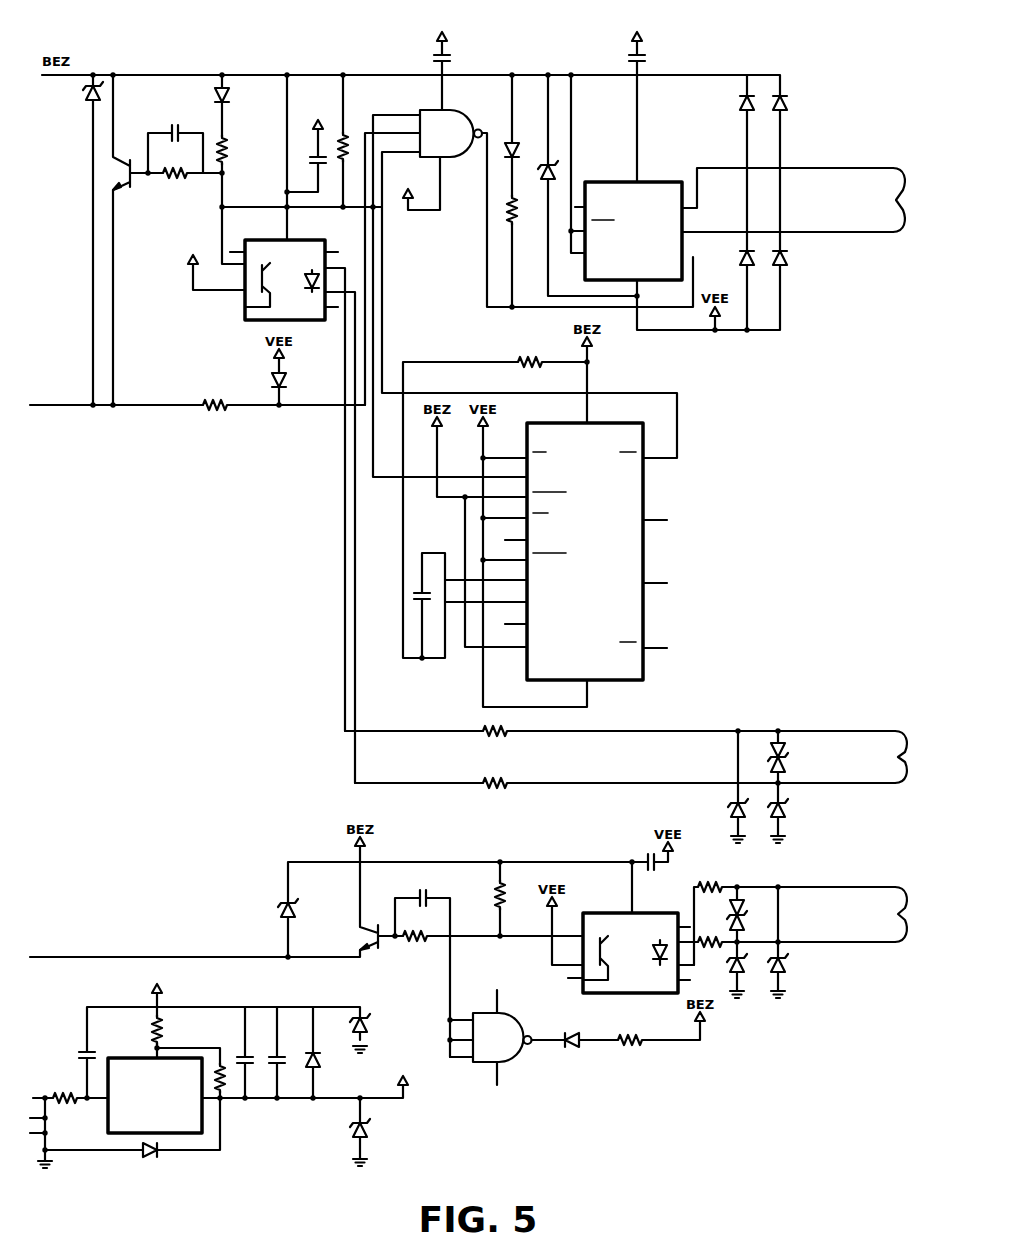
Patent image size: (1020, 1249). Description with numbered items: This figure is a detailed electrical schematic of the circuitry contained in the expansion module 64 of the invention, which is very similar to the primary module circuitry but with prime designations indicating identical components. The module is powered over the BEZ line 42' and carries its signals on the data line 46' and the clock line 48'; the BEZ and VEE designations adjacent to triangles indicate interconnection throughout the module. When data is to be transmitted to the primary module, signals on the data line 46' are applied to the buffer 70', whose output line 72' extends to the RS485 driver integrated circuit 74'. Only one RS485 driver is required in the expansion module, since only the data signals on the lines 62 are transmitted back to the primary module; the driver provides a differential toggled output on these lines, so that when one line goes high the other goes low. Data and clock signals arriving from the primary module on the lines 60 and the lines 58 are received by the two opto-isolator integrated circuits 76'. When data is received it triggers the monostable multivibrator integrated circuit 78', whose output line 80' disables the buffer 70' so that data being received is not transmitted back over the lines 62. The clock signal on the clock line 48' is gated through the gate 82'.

The BEZ line 42' is at (107, 218).
The data line 46' is at (197, 416).
The clock line 48' is at (204, 937).
The lines 58 is at (800, 946).
The lines 60 is at (626, 790).
The lines 62 is at (793, 192).
The expansion module 64 is at (454, 1133).
The buffer 70' is at (446, 112).
The output line 72' is at (573, 220).
The RS485 driver integrated circuit 74' is at (637, 147).
The opto-isolator integrated circuit 76' is at (436, 637).
The monostable multivibrator integrated circuit 78' is at (588, 563).
The output line 80' is at (550, 305).
The gate 82' is at (490, 1043).